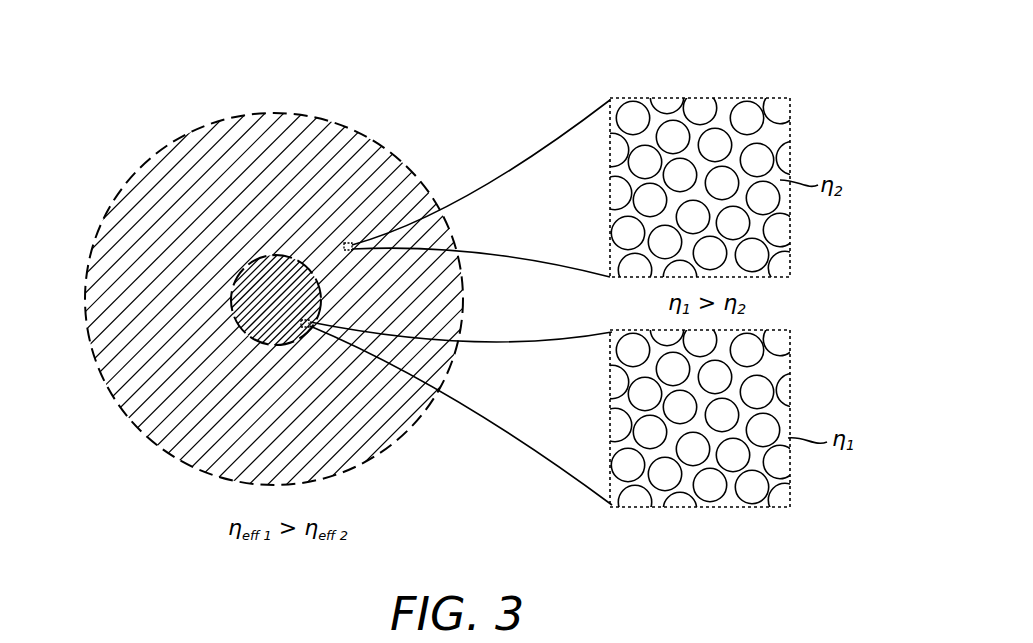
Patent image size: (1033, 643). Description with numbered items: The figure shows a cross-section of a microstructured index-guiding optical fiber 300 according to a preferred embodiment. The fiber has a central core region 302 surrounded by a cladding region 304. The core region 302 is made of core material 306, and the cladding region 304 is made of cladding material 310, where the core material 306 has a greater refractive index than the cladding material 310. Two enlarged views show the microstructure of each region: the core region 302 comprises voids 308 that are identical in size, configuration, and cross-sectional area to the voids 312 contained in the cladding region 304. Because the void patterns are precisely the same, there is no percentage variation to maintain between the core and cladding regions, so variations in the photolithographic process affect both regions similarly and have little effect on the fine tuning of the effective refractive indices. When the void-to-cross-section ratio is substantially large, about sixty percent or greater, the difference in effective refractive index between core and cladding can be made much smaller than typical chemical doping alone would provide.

The microstructured index-guiding optical fiber 300 is at (148, 163).
The core region 302 is at (232, 298).
The cladding region 304 is at (188, 427).
The core material 306 is at (777, 363).
The voids 308 is at (790, 410).
The cladding material 310 is at (762, 100).
The voids 312 is at (760, 143).